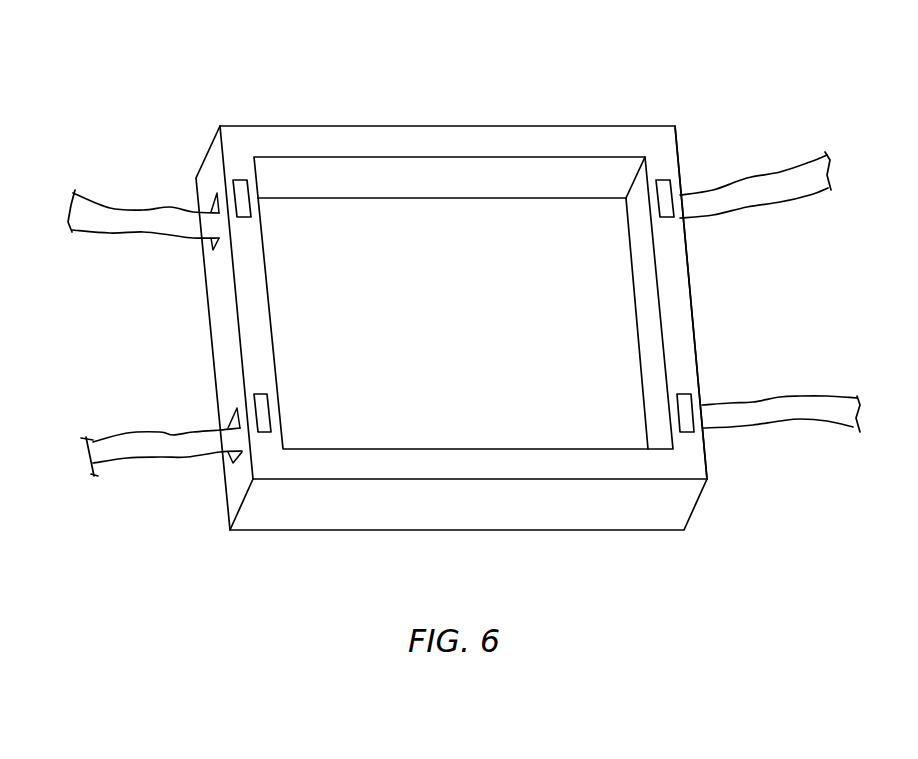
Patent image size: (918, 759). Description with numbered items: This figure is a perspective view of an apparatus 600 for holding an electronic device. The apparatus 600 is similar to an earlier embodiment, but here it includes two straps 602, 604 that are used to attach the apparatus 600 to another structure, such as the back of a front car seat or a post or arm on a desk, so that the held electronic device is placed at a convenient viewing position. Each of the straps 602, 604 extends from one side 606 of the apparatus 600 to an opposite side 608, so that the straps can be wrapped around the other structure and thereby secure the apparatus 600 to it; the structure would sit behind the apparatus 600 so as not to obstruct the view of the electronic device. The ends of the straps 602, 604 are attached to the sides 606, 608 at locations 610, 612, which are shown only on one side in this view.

The apparatus 600 is at (527, 80).
The strap 602 is at (157, 210).
The strap 604 is at (173, 435).
The side 606 is at (220, 315).
The opposite side 608 is at (693, 300).
The location 610 is at (217, 193).
The location 612 is at (233, 463).